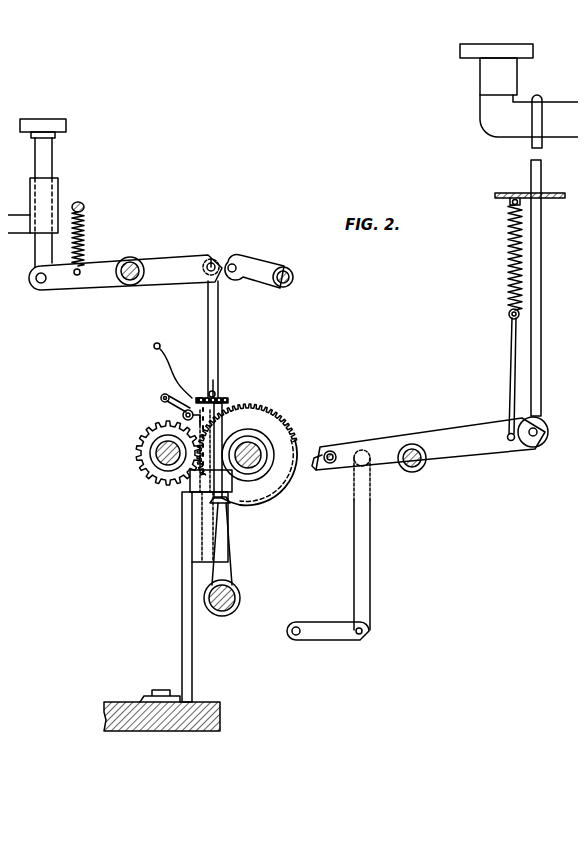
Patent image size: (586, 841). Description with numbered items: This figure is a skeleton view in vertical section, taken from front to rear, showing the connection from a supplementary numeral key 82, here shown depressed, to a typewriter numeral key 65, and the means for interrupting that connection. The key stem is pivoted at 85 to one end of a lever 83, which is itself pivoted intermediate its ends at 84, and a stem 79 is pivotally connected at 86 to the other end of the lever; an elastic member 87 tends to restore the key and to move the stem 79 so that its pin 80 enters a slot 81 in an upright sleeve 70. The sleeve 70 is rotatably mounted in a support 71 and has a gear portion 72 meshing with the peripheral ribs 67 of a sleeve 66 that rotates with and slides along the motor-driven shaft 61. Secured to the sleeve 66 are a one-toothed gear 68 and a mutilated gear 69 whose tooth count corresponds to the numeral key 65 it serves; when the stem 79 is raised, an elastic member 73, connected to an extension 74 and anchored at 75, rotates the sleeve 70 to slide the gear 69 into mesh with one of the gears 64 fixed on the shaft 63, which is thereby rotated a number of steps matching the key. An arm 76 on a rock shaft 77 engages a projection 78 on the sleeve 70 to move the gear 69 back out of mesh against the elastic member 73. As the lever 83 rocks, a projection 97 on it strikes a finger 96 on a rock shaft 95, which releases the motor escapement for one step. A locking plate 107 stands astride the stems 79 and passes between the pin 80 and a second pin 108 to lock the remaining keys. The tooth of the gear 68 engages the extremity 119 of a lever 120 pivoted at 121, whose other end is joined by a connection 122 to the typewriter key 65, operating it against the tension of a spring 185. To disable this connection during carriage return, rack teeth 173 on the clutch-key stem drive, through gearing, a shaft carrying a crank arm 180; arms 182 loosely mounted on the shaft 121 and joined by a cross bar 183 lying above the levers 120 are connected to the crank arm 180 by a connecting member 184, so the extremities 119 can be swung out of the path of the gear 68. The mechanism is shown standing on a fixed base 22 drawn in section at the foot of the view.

The base 22 is at (112, 701).
The shaft 61 is at (248, 445).
The shaft 63 is at (154, 454).
The gears 64 is at (145, 430).
The numeral keys of the typewriter 65 is at (519, 90).
The sleeve 66 is at (252, 481).
The peripheral spaced ribs 67 is at (263, 455).
The one-toothed gear 68 is at (272, 420).
The mutilated gear 69 is at (266, 406).
The upright sleeve 70 is at (226, 412).
The support 71 is at (200, 485).
The gear portion 72 is at (212, 470).
The elastic member 73 is at (186, 408).
The extension 74 is at (182, 415).
The anchor 75 is at (161, 396).
The arm 76 is at (234, 562).
The rock shaft 77 is at (240, 599).
The projection 78 is at (226, 506).
The stem 79 is at (219, 317).
The pin 80 is at (218, 398).
The slot 81 is at (169, 363).
The supplementary numeral key 82 is at (58, 119).
The lever or arm 83 is at (100, 290).
The pivot 84 is at (135, 259).
The pivotal connection 85 is at (42, 283).
The pivotal connection 86 is at (212, 258).
The elastic member 87 is at (86, 226).
The rock shaft 95 is at (294, 277).
The dogs or fingers 96 is at (267, 263).
The projection 97 is at (235, 273).
The locking plate 107 is at (198, 396).
The pin 108 is at (214, 378).
The extremity 119 is at (317, 472).
The arm or lever 120 is at (430, 444).
The pivot 121 is at (412, 444).
The connection 122 is at (542, 310).
The rack teeth 173 is at (298, 626).
The crank arm 180 is at (332, 641).
The arms 182 is at (362, 448).
The cross bar or rod 183 is at (329, 451).
The connecting rod 184 is at (371, 548).
The spring 185 is at (508, 266).